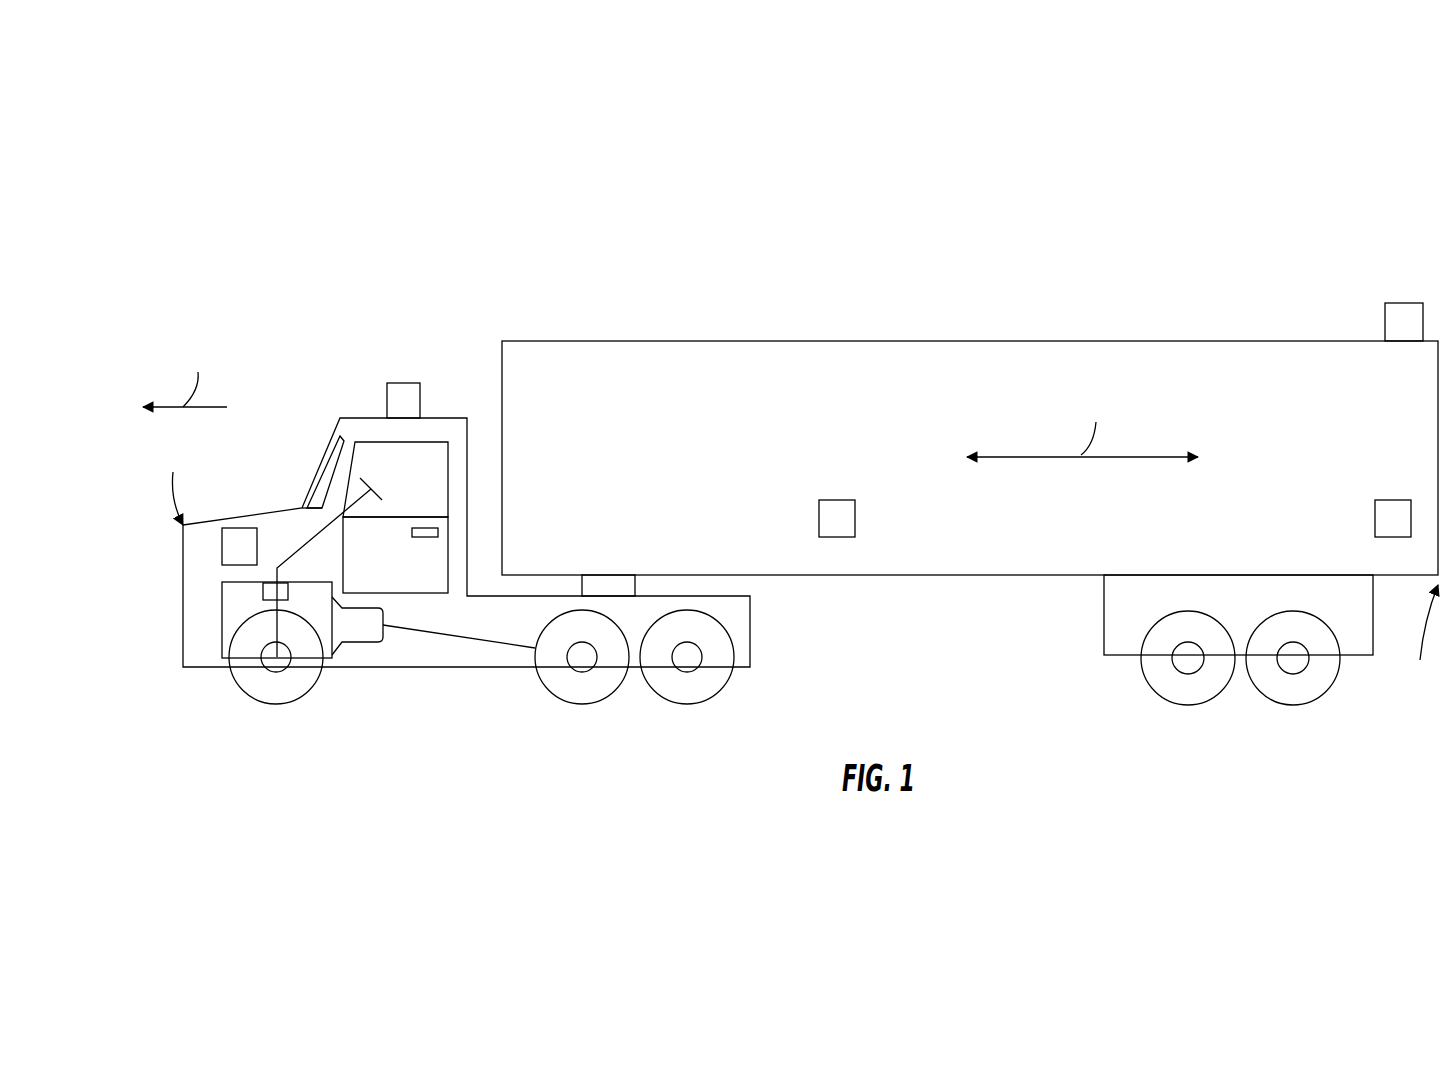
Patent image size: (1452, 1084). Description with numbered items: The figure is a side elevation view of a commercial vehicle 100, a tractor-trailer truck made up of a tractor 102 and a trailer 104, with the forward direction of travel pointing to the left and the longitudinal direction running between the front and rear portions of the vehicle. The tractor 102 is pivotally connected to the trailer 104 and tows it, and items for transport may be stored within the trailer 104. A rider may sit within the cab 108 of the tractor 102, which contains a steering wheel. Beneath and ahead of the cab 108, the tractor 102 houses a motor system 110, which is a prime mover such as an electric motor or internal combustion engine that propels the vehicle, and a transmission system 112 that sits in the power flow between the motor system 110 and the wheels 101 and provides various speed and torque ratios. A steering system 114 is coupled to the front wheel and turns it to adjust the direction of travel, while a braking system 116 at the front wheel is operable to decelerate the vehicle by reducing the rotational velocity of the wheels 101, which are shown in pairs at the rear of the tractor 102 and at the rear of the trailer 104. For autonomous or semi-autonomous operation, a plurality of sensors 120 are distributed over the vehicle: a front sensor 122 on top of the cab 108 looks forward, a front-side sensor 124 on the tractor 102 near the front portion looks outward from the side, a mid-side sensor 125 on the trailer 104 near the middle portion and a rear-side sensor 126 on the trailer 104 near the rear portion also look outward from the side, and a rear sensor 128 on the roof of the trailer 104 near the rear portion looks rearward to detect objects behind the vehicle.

The commercial vehicle 100 is at (262, 290).
The wheels 101 is at (675, 678).
The tractor 102 is at (285, 508).
The trailer 104 is at (947, 338).
The cab 108 is at (431, 468).
The motor system 110 is at (230, 612).
The transmission system 112 is at (360, 633).
The steering system 114 is at (263, 592).
The braking system 116 is at (275, 663).
The sensors 120 is at (387, 398).
The front sensor 122 is at (408, 395).
The front-side sensor 124 is at (238, 540).
The mid-side sensor 125 is at (840, 512).
The rear-side sensor 126 is at (1395, 512).
The rear sensor 128 is at (1407, 322).